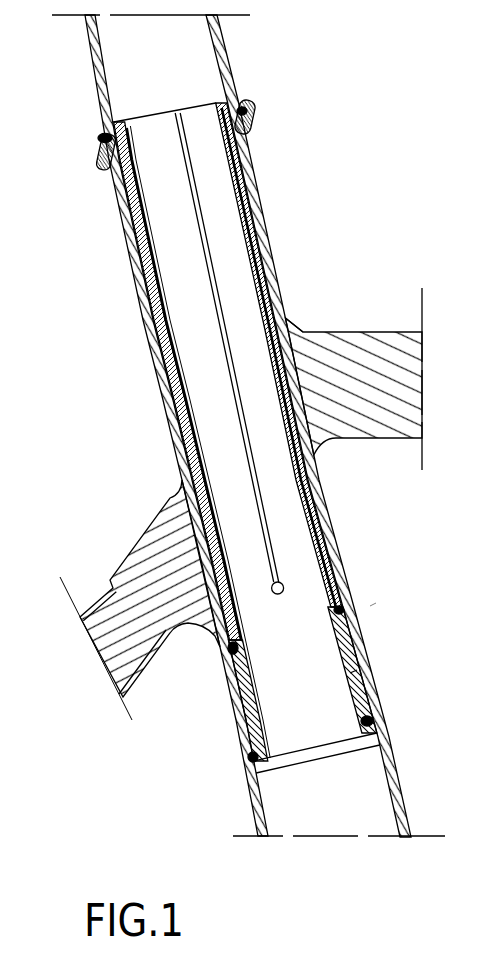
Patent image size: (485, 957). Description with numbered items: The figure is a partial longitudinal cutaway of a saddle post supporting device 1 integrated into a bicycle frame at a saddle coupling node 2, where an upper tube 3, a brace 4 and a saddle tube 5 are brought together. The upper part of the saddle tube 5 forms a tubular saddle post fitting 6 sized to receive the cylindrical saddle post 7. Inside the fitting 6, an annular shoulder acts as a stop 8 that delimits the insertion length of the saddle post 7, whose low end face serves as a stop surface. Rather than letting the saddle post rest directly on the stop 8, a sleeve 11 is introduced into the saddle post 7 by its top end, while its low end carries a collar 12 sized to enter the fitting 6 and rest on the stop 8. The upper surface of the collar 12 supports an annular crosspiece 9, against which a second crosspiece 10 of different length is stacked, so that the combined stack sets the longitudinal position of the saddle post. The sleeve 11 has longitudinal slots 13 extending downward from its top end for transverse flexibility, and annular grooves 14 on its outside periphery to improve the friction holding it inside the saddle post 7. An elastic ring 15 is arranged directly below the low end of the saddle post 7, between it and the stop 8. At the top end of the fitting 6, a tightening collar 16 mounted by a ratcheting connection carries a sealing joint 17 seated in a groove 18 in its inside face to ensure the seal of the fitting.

The saddle post supporting device 1 is at (374, 604).
The saddle coupling node 2 is at (306, 316).
The upper tube 3 is at (380, 350).
The brace 4 is at (168, 525).
The saddle tube 5 is at (360, 648).
The saddle post fitting 6 is at (262, 178).
The saddle post 7 is at (220, 62).
The stop 8 is at (247, 772).
The crosspiece 9 is at (372, 705).
The second crosspiece 10 is at (356, 670).
The sleeve 11 is at (170, 368).
The collar 12 is at (252, 760).
The longitudinal slots 13 is at (196, 230).
The annular grooves 14 is at (125, 200).
The elastic ring 15 is at (231, 656).
The tightening collar 16 is at (100, 150).
The sealing joint 17 is at (252, 118).
The groove 18 is at (104, 133).